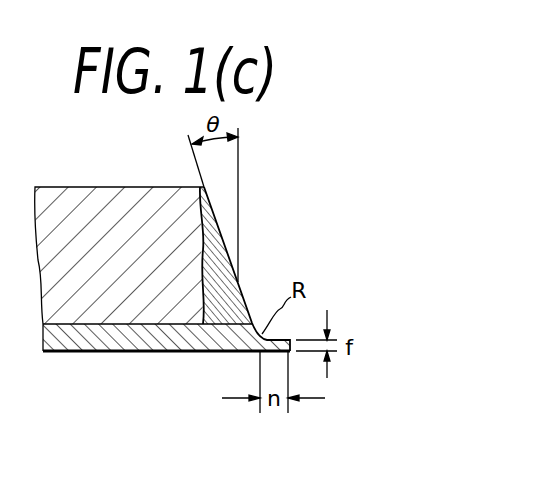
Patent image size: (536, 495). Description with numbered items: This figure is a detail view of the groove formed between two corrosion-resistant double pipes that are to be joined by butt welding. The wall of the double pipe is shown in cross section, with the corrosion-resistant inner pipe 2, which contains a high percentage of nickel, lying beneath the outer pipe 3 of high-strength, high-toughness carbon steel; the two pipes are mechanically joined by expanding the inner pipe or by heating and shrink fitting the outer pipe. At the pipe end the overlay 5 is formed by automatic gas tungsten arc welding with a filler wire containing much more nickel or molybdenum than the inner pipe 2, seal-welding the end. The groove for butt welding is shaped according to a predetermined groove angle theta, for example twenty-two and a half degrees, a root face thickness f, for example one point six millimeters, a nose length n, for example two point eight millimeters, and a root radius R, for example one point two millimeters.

The inner pipe 2 is at (157, 349).
The outer pipe 3 is at (121, 190).
The overlay 5 is at (233, 292).